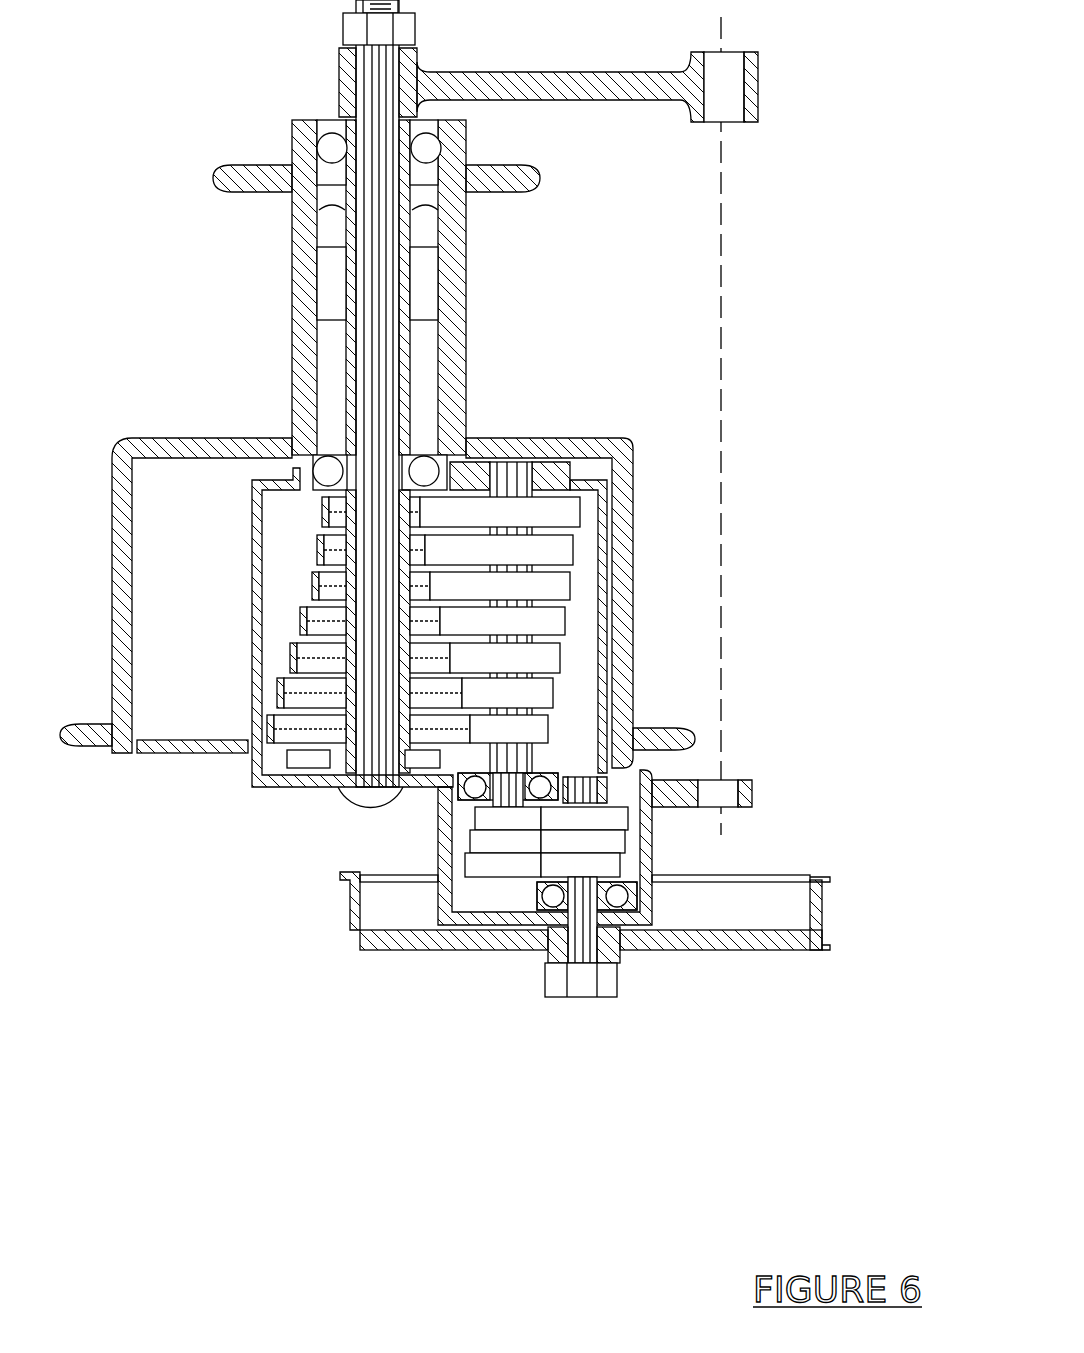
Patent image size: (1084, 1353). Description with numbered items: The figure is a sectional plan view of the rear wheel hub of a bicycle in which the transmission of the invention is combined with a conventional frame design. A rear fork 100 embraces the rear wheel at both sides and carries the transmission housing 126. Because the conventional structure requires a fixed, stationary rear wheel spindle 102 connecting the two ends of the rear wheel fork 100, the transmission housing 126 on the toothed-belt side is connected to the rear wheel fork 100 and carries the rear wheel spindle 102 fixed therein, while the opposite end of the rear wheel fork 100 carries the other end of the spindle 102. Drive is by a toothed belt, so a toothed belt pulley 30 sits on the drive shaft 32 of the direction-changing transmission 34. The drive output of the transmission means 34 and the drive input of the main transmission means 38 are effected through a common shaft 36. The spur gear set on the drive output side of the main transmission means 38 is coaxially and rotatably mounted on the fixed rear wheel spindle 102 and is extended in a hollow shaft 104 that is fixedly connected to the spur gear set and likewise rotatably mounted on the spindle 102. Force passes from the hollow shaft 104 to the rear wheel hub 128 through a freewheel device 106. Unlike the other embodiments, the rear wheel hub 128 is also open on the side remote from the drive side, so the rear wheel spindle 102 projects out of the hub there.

The toothed belt pulley 30 is at (398, 942).
The drive shaft 32 is at (577, 955).
The direction-changing transmission 34 is at (543, 843).
The common shaft 36 is at (477, 843).
The main transmission means 38 is at (550, 631).
The rear fork 100 is at (603, 85).
The rear wheel spindle 102 is at (363, 763).
The hollow shaft 104 is at (311, 128).
The freewheel device 106 is at (328, 310).
The transmission housing 126 is at (170, 745).
The rear wheel hub 128 is at (628, 541).